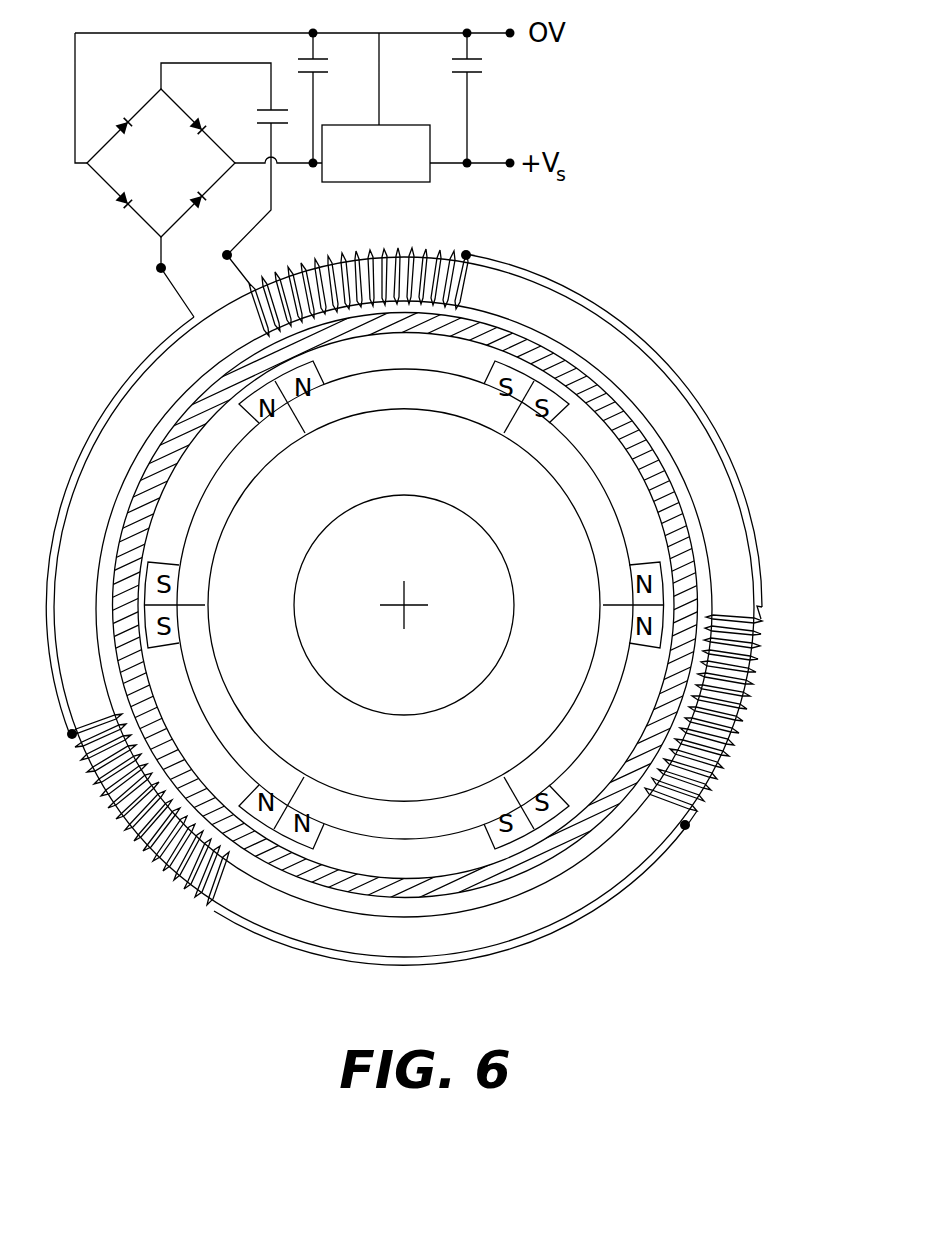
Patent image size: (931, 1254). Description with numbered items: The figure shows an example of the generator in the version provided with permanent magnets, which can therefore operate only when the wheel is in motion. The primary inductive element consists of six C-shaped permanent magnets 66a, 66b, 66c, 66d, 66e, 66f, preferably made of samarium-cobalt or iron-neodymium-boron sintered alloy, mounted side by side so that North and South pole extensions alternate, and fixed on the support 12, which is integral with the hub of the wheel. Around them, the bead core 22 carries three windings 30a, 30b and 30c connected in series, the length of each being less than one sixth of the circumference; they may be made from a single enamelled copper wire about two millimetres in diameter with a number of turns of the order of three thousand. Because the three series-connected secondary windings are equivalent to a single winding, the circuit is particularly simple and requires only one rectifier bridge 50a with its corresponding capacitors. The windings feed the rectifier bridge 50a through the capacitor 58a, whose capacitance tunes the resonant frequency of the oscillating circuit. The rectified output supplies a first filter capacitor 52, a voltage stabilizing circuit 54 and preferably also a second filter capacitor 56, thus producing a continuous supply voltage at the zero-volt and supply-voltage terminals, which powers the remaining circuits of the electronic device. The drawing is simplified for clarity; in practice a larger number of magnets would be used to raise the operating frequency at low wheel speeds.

The support 12 is at (516, 541).
The bead core 22 is at (502, 304).
The winding 30a is at (470, 255).
The winding 30b is at (762, 617).
The winding 30c is at (215, 907).
The rectifier bridge 50a is at (188, 176).
The first filter capacitor 52 is at (330, 66).
The voltage stabilizing circuit 54 is at (363, 174).
The second filter capacitor 56 is at (484, 66).
The capacitor 58a is at (254, 117).
The permanent magnet 66a is at (403, 396).
The permanent magnet 66b is at (565, 483).
The permanent magnet 66c is at (575, 712).
The permanent magnet 66d is at (405, 815).
The permanent magnet 66e is at (222, 706).
The permanent magnet 66f is at (224, 505).